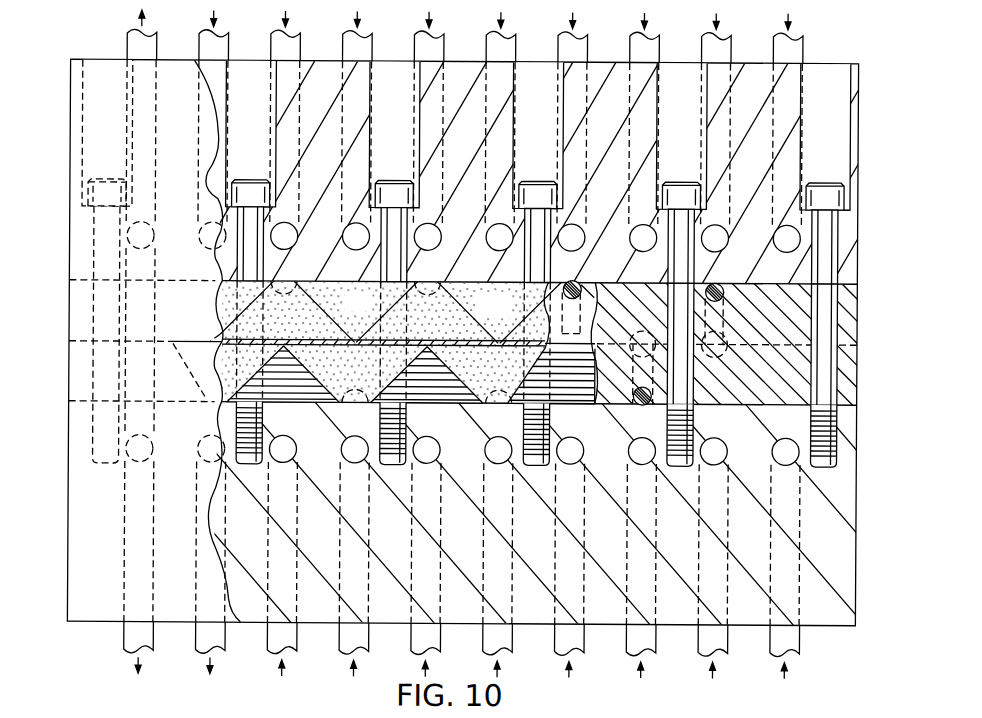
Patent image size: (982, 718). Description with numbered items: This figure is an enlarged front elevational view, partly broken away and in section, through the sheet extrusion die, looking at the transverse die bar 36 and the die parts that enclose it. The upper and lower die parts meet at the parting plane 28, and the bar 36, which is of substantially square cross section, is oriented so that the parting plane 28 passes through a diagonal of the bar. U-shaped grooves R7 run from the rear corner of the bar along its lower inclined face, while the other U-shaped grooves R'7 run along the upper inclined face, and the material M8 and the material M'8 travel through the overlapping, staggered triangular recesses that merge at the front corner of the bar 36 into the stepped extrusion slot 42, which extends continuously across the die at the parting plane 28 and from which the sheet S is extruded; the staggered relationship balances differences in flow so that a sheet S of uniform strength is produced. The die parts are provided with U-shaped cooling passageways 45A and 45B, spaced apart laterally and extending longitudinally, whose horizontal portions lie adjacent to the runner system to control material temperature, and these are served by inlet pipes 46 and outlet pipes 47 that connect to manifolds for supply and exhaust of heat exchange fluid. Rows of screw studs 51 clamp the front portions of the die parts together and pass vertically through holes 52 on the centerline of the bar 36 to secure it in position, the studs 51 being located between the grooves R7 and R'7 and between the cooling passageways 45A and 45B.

The parting plane 28 is at (866, 363).
The transverse die bar 36 is at (852, 314).
The stepped extrusion slot 42 is at (332, 338).
The cooling passageway 45A is at (347, 233).
The cooling passageway 45B is at (347, 459).
The inlet pipe 46 is at (278, 52).
The outlet pipe 47 is at (138, 46).
The screw stud 51 is at (248, 193).
The hole 52 is at (698, 408).
The sheet S is at (193, 343).
The material in recesses R8 M8 is at (469, 403).
The material in recesses R'8 M'8 is at (384, 340).
The U-shaped groove R7 is at (638, 401).
The U-shaped groove R'7 is at (655, 325).